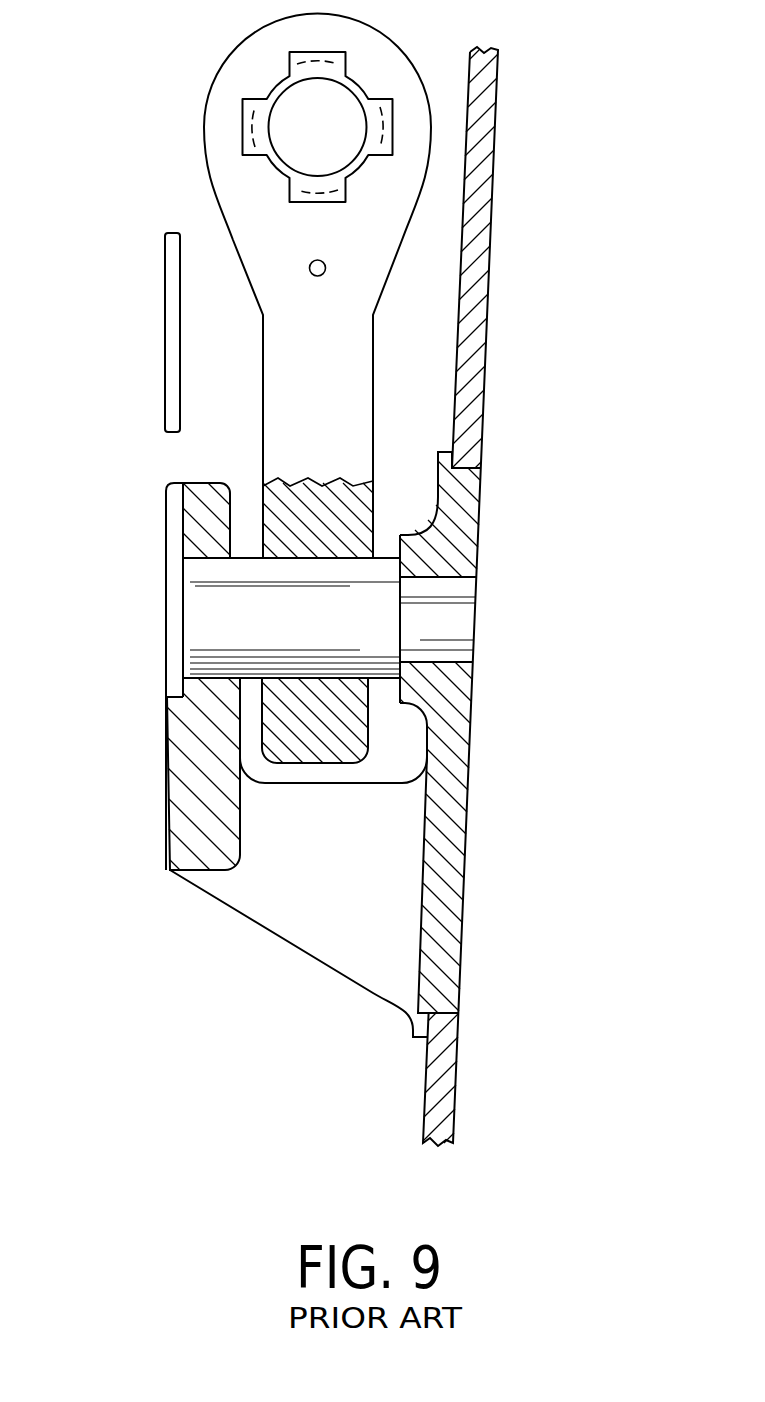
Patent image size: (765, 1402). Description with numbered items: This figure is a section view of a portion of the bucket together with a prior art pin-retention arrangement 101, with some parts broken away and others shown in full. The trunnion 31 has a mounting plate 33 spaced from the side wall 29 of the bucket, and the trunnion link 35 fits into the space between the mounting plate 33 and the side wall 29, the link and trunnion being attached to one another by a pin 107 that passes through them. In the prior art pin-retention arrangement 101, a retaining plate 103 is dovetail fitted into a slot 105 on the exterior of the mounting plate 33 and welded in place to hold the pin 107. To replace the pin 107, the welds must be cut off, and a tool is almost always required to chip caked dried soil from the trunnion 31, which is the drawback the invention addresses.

The side wall 29 is at (483, 245).
The trunnion 31 is at (290, 902).
The mounting plate 33 is at (175, 788).
The trunnion link 35 is at (348, 333).
The prior art pin-retention arrangement 101 is at (135, 461).
The retaining plate 103 is at (167, 298).
The slot 105 is at (172, 525).
The pin 107 is at (208, 618).